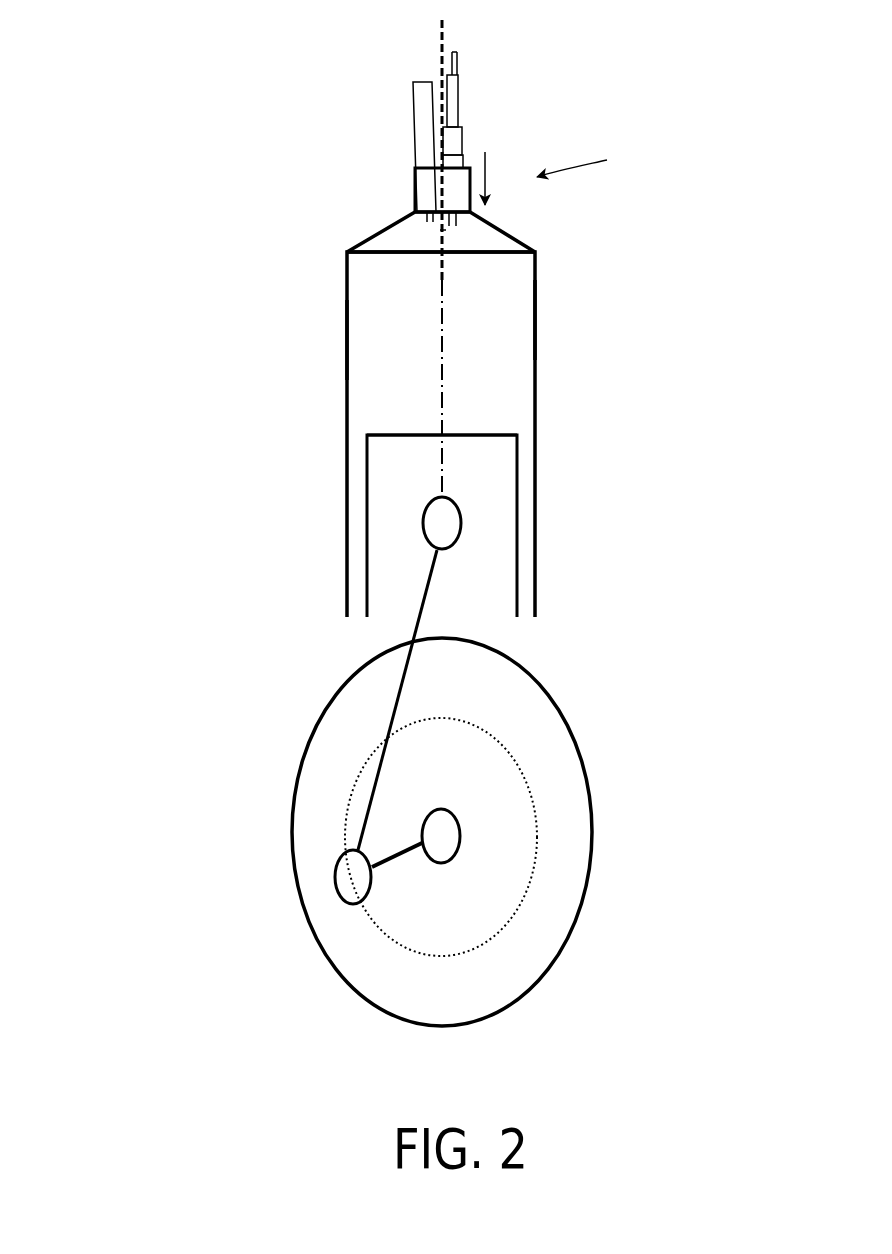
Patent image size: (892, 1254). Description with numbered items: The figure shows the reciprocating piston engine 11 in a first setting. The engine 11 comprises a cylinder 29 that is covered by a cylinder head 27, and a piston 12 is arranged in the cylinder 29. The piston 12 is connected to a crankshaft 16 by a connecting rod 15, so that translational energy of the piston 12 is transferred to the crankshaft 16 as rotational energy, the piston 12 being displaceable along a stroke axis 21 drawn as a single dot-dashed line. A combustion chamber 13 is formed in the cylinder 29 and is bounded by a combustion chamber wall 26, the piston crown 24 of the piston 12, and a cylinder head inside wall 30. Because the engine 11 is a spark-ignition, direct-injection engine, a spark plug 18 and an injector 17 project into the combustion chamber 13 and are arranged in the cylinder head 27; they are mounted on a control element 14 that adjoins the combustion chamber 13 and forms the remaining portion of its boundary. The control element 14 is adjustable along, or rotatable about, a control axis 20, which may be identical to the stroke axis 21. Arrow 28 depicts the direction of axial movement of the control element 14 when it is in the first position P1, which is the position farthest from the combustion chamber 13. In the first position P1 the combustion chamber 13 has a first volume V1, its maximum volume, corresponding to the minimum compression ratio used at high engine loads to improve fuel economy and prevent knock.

The reciprocating piston engine 11 is at (227, 152).
The piston 12 is at (518, 517).
The combustion chamber 13 is at (418, 341).
The control element 14 is at (413, 190).
The connecting rod 15 is at (413, 620).
The crankshaft 16 is at (462, 835).
The injector 17 is at (415, 113).
The spark plug 18 is at (462, 108).
The control axis 20 is at (443, 238).
The stroke axis 21 is at (440, 377).
The piston crown 24 is at (497, 435).
The combustion chamber wall 26 is at (535, 318).
The cylinder head 27 is at (397, 283).
The arrow 28 is at (485, 165).
The cylinder 29 is at (347, 338).
The cylinder head inside wall 30 is at (397, 283).
The first volume V1 is at (490, 341).
The first position P1 is at (595, 162).